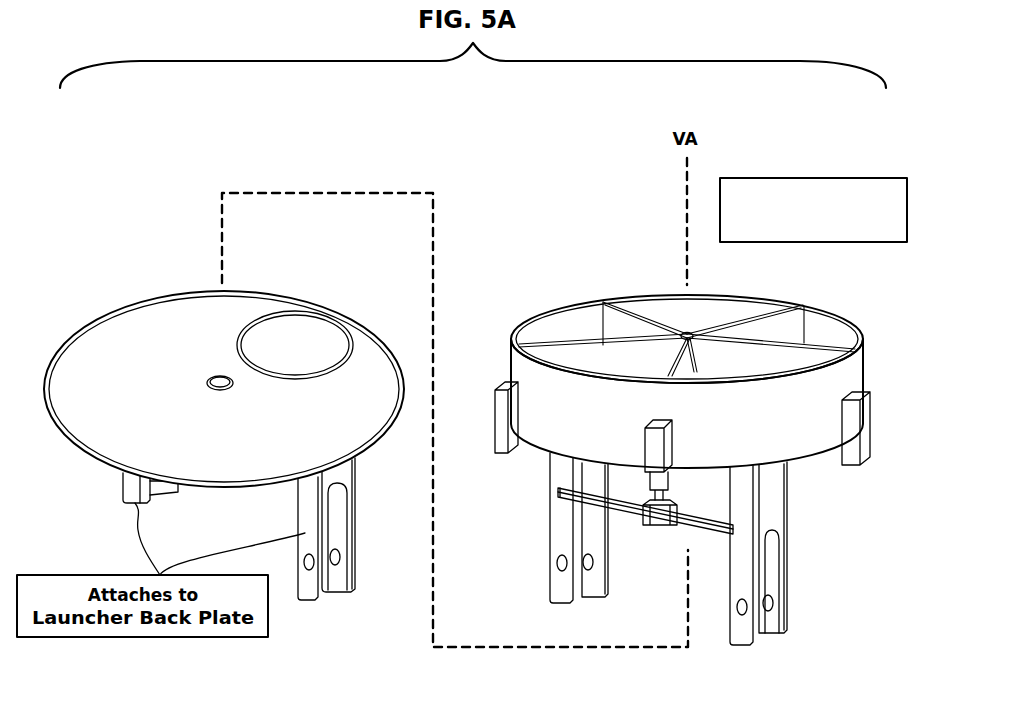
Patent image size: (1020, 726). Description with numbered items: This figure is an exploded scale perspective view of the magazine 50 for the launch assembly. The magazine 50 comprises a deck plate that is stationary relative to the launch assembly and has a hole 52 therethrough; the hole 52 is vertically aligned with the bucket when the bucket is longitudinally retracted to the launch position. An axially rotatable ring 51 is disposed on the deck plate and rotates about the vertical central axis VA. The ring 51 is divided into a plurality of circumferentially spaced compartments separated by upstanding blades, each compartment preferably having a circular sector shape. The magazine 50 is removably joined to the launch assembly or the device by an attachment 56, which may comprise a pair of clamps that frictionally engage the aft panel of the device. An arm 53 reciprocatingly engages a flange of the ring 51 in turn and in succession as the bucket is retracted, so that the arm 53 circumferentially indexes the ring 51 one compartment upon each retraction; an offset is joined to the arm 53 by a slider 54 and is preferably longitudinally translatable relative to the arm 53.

The magazine 50 is at (715, 435).
The ring 51 is at (862, 326).
The hole 52 is at (283, 356).
The arm 53 is at (603, 507).
The slider 54 is at (676, 503).
The attachment 56 is at (342, 470).